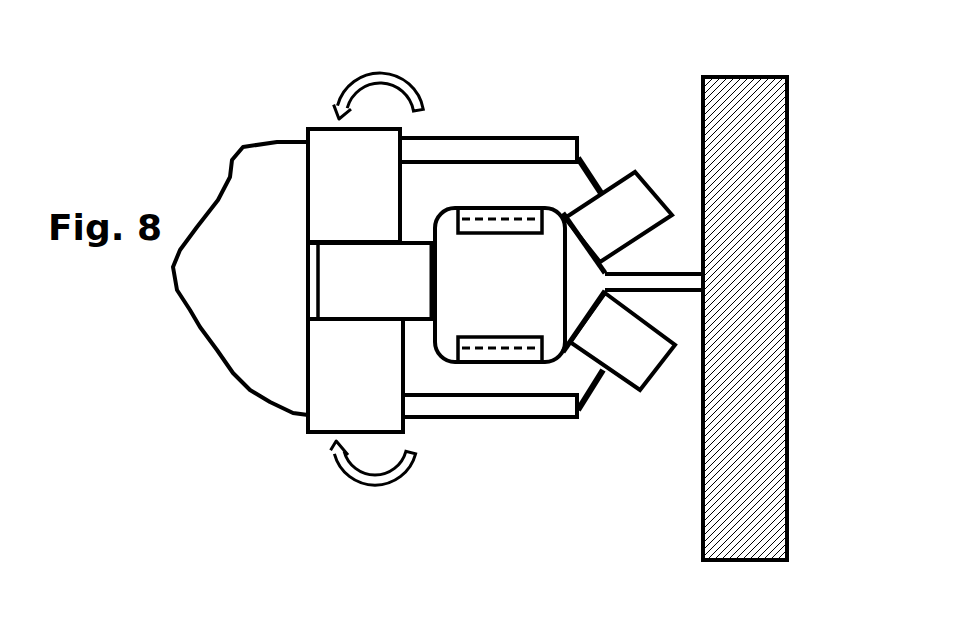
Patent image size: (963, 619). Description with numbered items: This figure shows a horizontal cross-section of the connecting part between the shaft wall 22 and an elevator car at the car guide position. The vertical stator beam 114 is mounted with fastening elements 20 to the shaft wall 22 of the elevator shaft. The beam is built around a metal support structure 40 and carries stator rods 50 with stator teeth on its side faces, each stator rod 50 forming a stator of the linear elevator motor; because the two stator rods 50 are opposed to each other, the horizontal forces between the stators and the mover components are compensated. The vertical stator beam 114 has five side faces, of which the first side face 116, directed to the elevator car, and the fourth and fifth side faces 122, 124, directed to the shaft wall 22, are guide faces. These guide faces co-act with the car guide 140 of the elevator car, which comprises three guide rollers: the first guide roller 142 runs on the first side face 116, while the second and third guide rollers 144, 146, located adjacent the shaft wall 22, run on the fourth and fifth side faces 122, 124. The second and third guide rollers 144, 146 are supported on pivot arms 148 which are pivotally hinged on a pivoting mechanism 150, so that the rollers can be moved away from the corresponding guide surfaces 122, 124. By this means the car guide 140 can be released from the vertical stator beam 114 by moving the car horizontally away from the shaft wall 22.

The fastening elements 20 is at (657, 280).
The shaft wall 22 is at (760, 325).
The support structure 40 is at (467, 270).
The stator rod 50 is at (497, 220).
The vertical stator beam 114 is at (560, 192).
The first side face 116 is at (428, 280).
The fourth side face 122 is at (563, 211).
The fifth side face 124 is at (567, 347).
The car guide 140 is at (513, 468).
The first guide roller 142 is at (375, 292).
The second guide roller 144 is at (623, 215).
The third guide roller 146 is at (635, 352).
The pivot arms 148 is at (487, 150).
The pivoting mechanism 150 is at (375, 155).